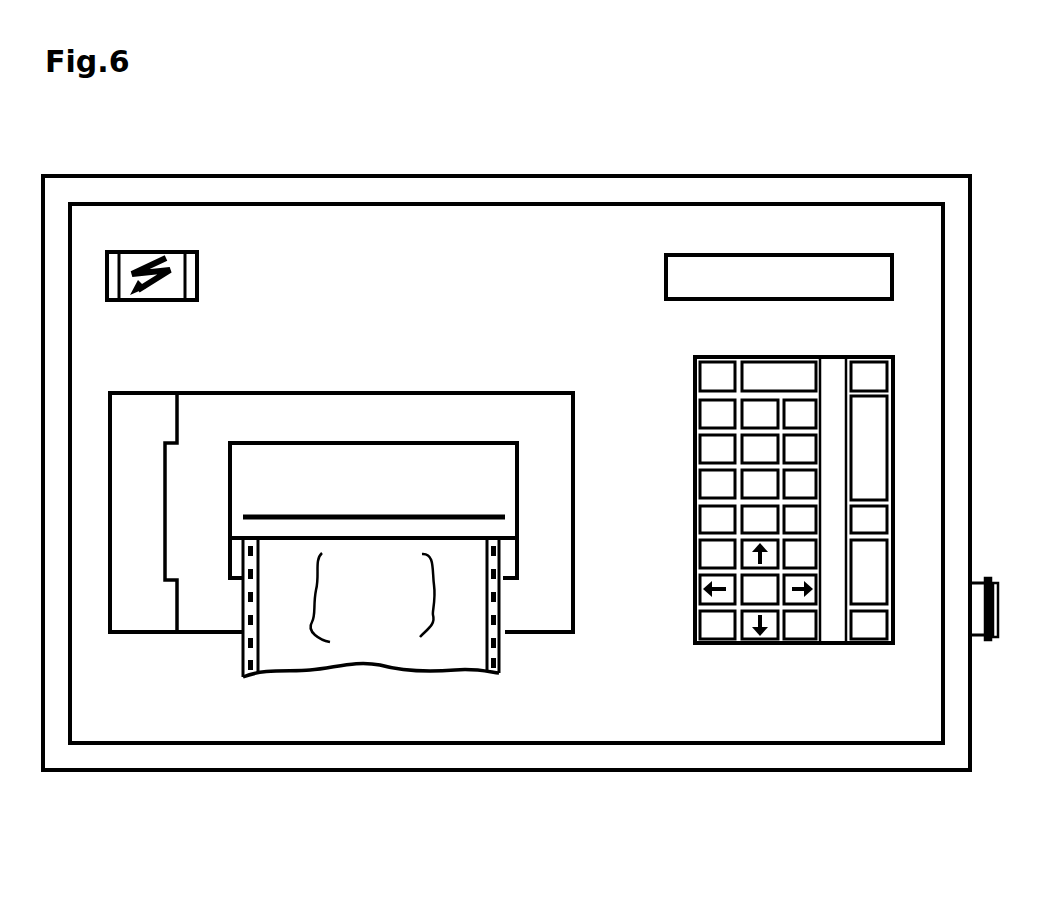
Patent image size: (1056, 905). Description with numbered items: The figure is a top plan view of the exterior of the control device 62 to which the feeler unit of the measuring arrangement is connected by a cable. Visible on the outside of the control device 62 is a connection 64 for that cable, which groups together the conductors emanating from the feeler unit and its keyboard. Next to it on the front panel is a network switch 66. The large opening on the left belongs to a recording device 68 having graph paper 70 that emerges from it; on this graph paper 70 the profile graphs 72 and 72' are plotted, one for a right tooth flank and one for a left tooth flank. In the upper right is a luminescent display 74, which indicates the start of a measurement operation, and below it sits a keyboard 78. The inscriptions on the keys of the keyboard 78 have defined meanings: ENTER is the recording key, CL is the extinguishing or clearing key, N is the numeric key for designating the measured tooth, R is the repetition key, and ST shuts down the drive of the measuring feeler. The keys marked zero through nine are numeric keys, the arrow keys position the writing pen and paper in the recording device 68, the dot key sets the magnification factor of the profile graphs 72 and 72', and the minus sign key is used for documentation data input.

The control device 62 is at (465, 190).
The connection 64 is at (998, 597).
The network switch 66 is at (132, 262).
The recording device 68 is at (218, 408).
The graph paper 70 is at (355, 660).
The profile graph 72 is at (489, 628).
The profile graph 72' is at (275, 639).
The luminescent display 74 is at (675, 276).
The keyboard 78 is at (826, 658).